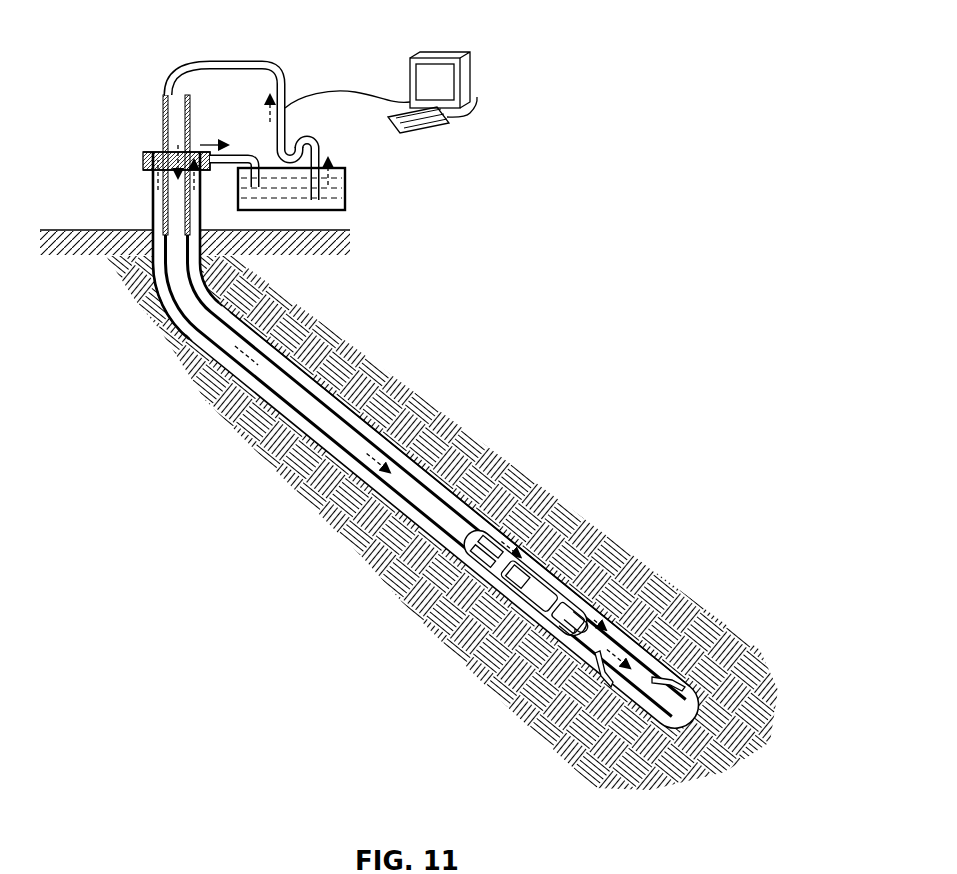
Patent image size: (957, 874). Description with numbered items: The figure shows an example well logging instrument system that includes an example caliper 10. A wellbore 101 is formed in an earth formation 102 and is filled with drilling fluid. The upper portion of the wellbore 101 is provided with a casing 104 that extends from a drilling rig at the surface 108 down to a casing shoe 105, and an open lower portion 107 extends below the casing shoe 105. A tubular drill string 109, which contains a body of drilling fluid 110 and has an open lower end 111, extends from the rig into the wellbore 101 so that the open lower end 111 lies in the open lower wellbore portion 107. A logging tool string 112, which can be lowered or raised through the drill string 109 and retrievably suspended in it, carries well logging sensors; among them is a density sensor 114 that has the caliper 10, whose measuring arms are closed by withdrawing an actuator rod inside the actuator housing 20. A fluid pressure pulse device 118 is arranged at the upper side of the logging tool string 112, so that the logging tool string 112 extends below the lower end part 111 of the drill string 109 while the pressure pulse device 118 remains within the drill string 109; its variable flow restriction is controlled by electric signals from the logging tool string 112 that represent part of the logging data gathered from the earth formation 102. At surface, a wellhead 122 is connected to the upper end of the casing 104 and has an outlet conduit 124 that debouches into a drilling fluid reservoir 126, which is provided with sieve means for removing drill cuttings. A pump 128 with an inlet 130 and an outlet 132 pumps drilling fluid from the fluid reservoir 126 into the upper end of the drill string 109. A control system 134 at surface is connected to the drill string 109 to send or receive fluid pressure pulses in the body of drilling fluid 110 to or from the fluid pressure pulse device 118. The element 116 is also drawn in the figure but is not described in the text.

The caliper 10 is at (705, 690).
The actuator housing 20 is at (470, 585).
The wellbore 101 is at (540, 473).
The earth formation 102 is at (616, 425).
The casing 104 is at (158, 327).
The casing shoe 105 is at (222, 302).
The open lower portion 107 is at (535, 540).
The surface 108 is at (95, 230).
The drill string 109 is at (448, 440).
The body of drilling fluid 110 is at (328, 466).
The open lower end 111 is at (595, 590).
The logging tool string 112 is at (608, 628).
The density sensor 114 is at (680, 680).
The stabilizer 116 is at (612, 690).
The fluid pressure pulse device 118 is at (540, 553).
The wellhead 122 is at (141, 186).
The outlet conduit 124 is at (243, 155).
The drilling fluid reservoir 126 is at (346, 195).
The pump 128 is at (298, 140).
The inlet 130 is at (330, 154).
The outlet 132 is at (281, 74).
The control system 134 is at (455, 62).